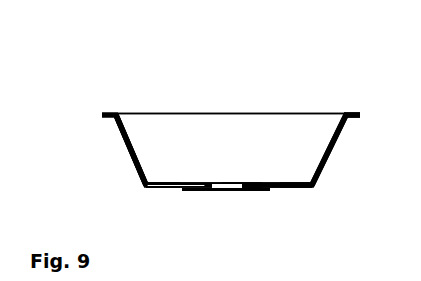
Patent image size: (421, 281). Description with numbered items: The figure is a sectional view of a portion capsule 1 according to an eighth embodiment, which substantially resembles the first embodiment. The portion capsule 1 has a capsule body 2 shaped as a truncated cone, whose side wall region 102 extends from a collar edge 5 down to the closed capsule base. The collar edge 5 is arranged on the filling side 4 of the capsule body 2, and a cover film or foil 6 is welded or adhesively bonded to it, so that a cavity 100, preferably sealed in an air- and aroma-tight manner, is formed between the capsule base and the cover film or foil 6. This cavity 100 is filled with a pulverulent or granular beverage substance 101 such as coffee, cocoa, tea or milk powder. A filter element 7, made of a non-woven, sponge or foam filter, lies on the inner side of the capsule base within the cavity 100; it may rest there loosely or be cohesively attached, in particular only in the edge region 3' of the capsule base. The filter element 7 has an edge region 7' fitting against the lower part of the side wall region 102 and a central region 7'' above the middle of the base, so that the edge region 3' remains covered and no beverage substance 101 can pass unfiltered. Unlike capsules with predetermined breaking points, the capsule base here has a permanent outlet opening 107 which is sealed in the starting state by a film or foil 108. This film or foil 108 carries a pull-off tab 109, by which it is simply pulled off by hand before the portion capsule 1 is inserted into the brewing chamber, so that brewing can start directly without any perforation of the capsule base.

The portion capsule 1 is at (136, 84).
The capsule body 2 is at (133, 152).
The side wall region 102 is at (133, 152).
The edge region of the capsule base 3' is at (208, 215).
The filling side 4 is at (229, 102).
The collar edge 5 is at (348, 118).
The cover film or foil 6 is at (305, 113).
The filter element 7 is at (327, 173).
The edge region of the filter element 7' is at (121, 155).
The central region of the filter element 7'' is at (258, 120).
The cavity 100 is at (197, 123).
The beverage substance 101 is at (197, 123).
The outlet opening 107 is at (228, 193).
The film or foil 108 is at (203, 191).
The pull-off tab 109 is at (268, 191).